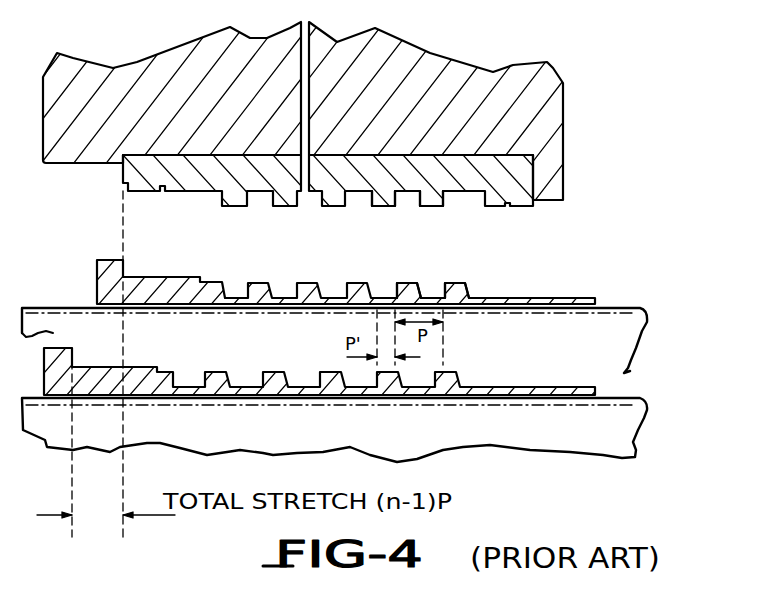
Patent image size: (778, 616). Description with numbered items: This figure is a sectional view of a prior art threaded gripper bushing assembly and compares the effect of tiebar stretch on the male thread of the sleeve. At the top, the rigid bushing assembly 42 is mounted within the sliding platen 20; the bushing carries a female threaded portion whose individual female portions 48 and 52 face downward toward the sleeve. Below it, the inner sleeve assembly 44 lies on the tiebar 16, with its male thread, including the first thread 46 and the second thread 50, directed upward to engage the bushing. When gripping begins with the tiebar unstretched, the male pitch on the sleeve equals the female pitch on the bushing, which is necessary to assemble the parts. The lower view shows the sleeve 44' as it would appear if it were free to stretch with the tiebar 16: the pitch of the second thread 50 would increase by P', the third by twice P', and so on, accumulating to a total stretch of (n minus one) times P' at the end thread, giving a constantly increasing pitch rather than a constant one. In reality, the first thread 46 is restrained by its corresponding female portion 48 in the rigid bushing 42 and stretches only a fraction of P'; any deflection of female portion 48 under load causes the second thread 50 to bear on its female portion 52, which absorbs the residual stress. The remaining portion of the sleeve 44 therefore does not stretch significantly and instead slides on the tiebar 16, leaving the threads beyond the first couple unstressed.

The sliding platen 20 is at (545, 130).
The bushing assembly 42 is at (547, 183).
The female portion 52 is at (387, 200).
The female portion 48 is at (443, 196).
The inner sleeve assembly 44 is at (349, 282).
The first thread 46 is at (450, 293).
The second thread 50 is at (403, 283).
The stretched sleeve 44' is at (328, 371).
The tiebar 16 is at (635, 323).